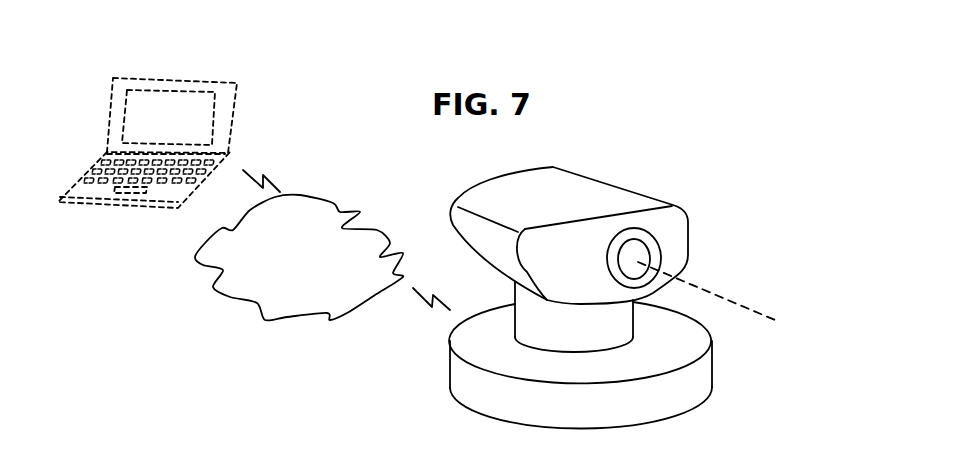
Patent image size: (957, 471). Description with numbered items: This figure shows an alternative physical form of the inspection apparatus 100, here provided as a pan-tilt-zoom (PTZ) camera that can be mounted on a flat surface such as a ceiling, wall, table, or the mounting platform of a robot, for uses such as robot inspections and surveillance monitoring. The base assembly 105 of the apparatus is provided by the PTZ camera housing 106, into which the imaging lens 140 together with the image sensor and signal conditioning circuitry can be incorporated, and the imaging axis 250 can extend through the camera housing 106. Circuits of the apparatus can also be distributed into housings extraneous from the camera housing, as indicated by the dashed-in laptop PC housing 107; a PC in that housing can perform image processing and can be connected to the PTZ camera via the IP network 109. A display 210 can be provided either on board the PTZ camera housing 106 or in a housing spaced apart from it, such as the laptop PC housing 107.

The inspection apparatus 100 is at (575, 158).
The base assembly 105 is at (625, 180).
The PTZ camera housing 106 is at (643, 297).
The laptop PC housing 107 is at (235, 108).
The IP network 109 is at (263, 320).
The imaging lens 140 is at (645, 255).
The display 210 is at (148, 108).
The imaging axis 250 is at (727, 298).